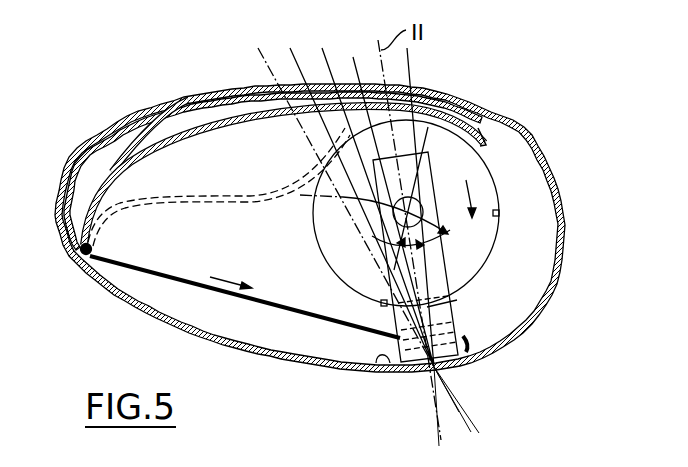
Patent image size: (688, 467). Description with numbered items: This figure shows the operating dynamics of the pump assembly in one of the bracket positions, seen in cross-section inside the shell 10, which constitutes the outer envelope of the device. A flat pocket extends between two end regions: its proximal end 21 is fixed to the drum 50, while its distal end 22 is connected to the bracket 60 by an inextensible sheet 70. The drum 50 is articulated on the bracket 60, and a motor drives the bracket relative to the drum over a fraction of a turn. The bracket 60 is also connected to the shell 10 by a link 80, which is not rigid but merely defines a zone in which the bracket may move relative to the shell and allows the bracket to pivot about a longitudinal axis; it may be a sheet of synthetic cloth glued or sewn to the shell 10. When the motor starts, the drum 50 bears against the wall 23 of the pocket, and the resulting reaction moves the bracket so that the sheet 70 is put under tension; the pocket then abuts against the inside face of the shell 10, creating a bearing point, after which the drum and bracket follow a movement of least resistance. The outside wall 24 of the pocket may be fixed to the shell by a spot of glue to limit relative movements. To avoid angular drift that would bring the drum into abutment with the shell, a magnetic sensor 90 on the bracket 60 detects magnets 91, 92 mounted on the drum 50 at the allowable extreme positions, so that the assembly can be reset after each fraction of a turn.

The shell 10 is at (552, 286).
The proximal end 21 is at (484, 135).
The distal end 22 is at (93, 249).
The wall 23 is at (197, 128).
The outside wall 24 is at (165, 110).
The drum 50 is at (490, 250).
The bracket 60 is at (452, 313).
The inextensible sheet 70 is at (237, 297).
The link 80 is at (378, 366).
The magnetic sensor 90 is at (434, 300).
The magnet 91 is at (380, 305).
The magnet 92 is at (500, 213).